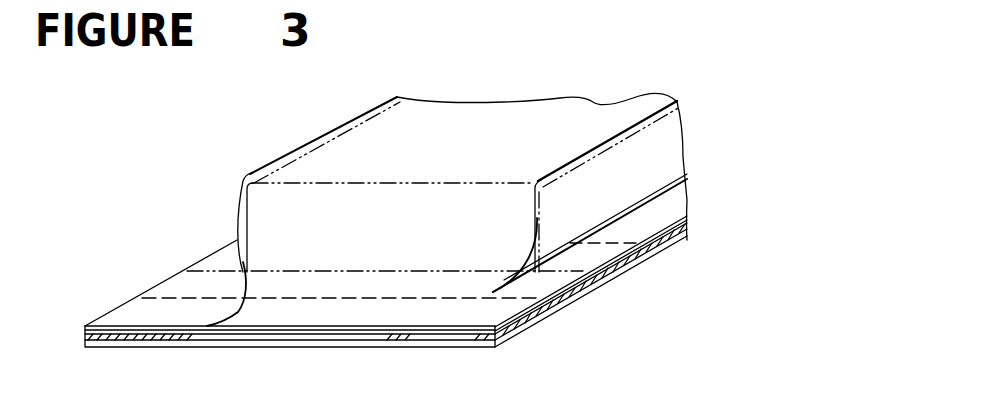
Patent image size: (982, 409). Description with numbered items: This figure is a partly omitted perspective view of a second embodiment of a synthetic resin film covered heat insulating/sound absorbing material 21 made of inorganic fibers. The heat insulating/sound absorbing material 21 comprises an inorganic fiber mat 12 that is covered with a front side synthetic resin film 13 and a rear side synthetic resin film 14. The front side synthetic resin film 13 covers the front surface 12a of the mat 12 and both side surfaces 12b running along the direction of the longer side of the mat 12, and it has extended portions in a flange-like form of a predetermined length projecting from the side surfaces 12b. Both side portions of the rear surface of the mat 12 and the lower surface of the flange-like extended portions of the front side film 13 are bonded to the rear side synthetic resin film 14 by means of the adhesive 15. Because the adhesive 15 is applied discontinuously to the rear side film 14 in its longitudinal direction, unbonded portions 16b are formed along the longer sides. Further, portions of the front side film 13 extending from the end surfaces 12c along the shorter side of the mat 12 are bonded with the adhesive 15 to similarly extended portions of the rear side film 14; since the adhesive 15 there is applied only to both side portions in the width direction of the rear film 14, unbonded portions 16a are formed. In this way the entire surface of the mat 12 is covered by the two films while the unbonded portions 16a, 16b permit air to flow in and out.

The inorganic fiber mat 12 is at (657, 148).
The front surface 12a is at (348, 147).
The side surfaces 12b is at (617, 185).
The end surfaces 12c is at (500, 227).
The front side synthetic resin film 13 is at (222, 258).
The rear side synthetic resin film 14 is at (477, 348).
The adhesive 15 is at (420, 343).
The unbonded portions 16a is at (288, 342).
The unbonded portions 16b is at (575, 297).
The heat insulating/sound absorbing material 21 is at (232, 185).